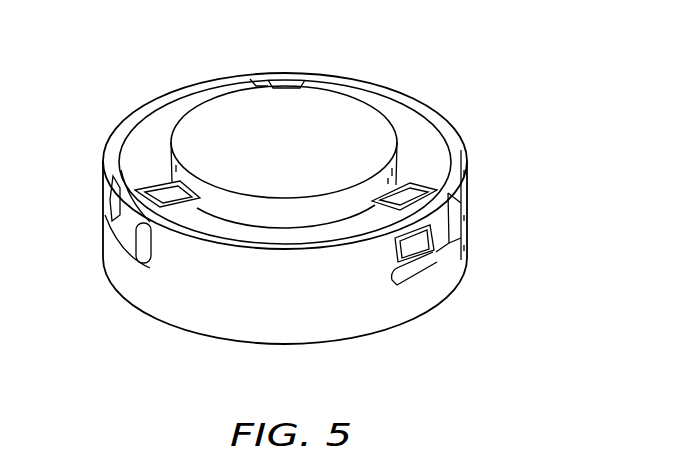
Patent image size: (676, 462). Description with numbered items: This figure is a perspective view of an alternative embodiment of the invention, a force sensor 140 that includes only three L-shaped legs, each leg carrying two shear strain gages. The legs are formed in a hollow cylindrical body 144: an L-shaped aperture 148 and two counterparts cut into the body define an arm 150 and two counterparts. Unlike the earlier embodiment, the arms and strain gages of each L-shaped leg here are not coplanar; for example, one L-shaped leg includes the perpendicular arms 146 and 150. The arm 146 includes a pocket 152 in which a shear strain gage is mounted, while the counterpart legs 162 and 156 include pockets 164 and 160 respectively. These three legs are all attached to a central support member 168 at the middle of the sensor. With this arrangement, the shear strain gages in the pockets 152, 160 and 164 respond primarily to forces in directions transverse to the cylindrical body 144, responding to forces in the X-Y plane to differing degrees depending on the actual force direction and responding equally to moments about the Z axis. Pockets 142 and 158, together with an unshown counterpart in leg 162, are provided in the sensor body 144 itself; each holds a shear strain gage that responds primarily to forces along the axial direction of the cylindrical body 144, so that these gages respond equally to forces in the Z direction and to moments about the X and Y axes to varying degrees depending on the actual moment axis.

The force sensor 140 is at (285, 185).
The pocket 142 is at (417, 247).
The hollow cylindrical body 144 is at (177, 303).
The arm 146 is at (417, 203).
The L-shaped aperture 148 is at (423, 268).
The arm 150 is at (443, 230).
The pocket 152 is at (452, 190).
The leg 156 is at (150, 187).
The pocket 158 is at (113, 192).
The pocket 160 is at (143, 207).
The leg 162 is at (323, 78).
The pocket 164 is at (283, 88).
The central support member 168 is at (208, 122).